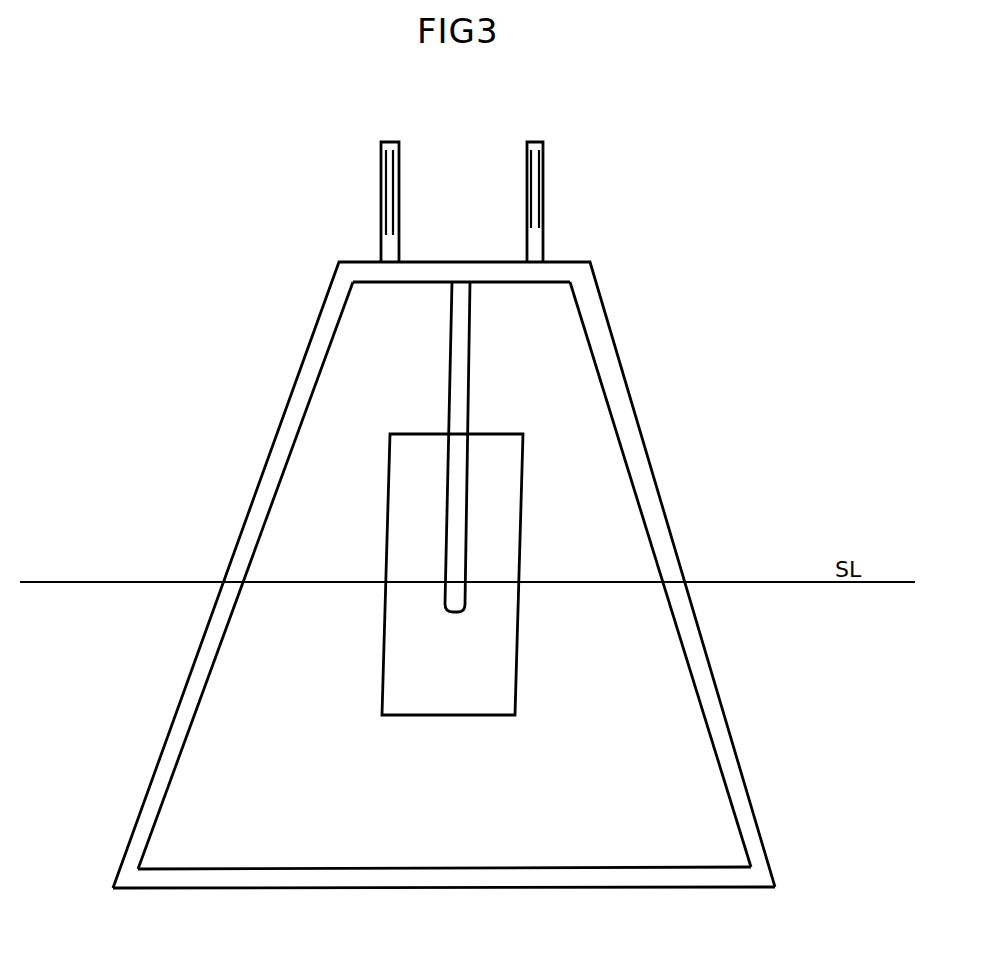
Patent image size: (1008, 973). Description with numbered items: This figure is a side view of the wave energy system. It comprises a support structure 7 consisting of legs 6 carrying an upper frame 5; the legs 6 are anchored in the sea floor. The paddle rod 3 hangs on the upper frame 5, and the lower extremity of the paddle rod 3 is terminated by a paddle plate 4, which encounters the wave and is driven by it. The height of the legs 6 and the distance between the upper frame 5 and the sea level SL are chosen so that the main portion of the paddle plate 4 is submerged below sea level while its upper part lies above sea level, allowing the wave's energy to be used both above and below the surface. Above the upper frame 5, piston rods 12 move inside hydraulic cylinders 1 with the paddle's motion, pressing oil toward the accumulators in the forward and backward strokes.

The hydraulic cylinder 1 is at (543, 190).
The piston rod 12 is at (538, 162).
The paddle rod 3 is at (457, 350).
The paddle plate 4 is at (397, 552).
The upper frame 5 is at (570, 257).
The leg 6 is at (182, 718).
The support structure 7 is at (348, 878).